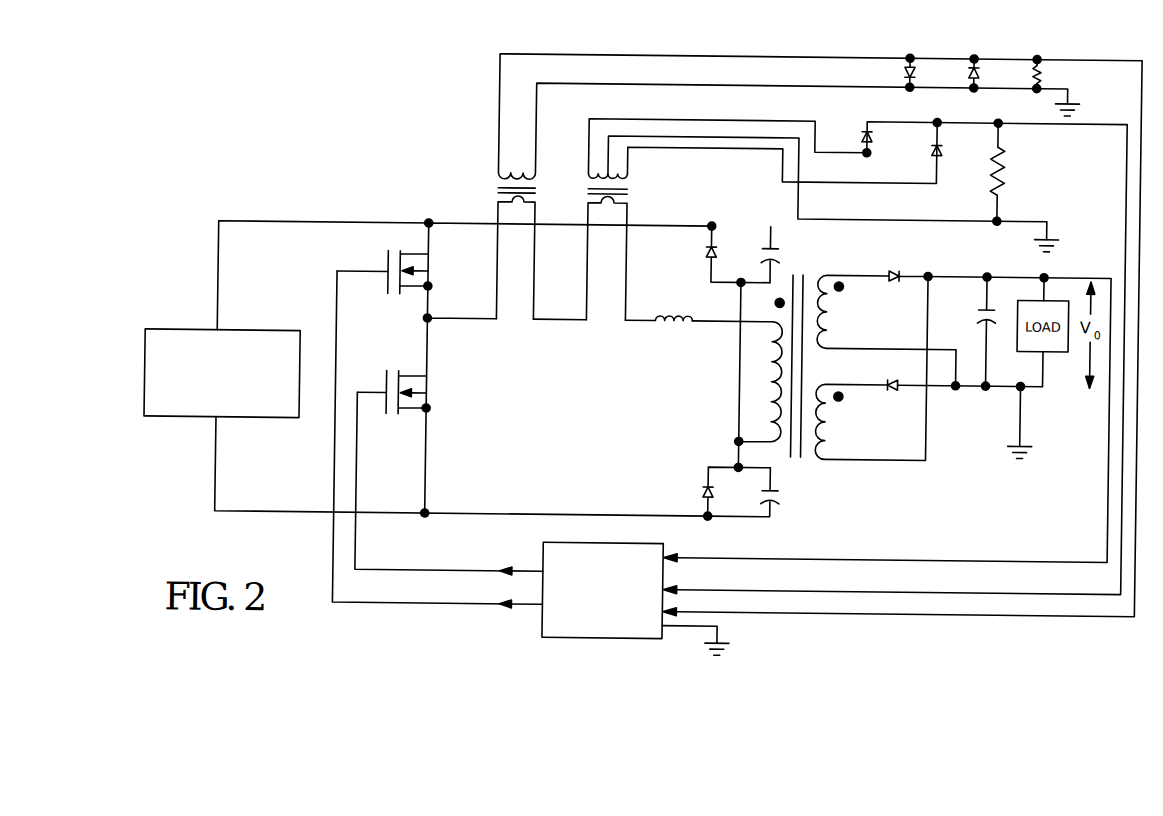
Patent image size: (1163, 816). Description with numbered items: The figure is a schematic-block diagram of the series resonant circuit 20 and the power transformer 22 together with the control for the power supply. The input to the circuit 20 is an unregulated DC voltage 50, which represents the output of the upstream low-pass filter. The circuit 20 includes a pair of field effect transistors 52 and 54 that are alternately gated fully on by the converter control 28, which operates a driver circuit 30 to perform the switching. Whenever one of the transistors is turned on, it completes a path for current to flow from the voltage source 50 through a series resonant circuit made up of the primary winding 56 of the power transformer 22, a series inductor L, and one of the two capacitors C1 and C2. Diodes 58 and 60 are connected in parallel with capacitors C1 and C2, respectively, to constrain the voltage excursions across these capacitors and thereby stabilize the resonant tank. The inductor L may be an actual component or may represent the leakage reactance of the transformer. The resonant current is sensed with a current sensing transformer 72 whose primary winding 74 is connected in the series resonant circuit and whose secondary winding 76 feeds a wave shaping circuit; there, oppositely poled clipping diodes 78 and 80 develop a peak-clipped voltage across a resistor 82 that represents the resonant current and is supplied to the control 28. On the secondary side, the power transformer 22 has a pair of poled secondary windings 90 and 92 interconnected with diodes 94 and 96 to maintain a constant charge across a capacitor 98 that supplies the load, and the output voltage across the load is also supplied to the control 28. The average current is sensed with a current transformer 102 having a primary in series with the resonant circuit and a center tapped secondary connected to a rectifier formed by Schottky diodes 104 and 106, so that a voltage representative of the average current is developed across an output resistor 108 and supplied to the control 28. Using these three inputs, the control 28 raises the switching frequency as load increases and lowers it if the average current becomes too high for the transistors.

The series resonant circuit 20 is at (590, 424).
The power transformer 22 is at (828, 386).
The control 28 is at (636, 585).
The driver circuit 30 is at (580, 553).
The unregulated DC voltage 50 is at (276, 403).
The field effect transistor 52 is at (429, 266).
The field effect transistor 54 is at (432, 379).
The primary winding 56 is at (768, 387).
The diode 58 is at (703, 252).
The diode 60 is at (705, 490).
The current sensing transformer 72 is at (794, 335).
The primary winding 74 is at (516, 205).
The secondary winding 76 is at (511, 176).
The clipping diode 78 is at (898, 72).
The clipping diode 80 is at (961, 71).
The resistor 82 is at (1028, 69).
The secondary winding 90 is at (829, 423).
The secondary winding 92 is at (829, 312).
The diode 94 is at (891, 267).
The diode 96 is at (889, 378).
The capacitor 98 is at (975, 316).
The current transformer 102 is at (630, 191).
The Schottky diode 104 is at (859, 134).
The Schottky diode 106 is at (929, 145).
The output resistor 108 is at (1010, 175).
The capacitor C1 is at (784, 256).
The capacitor C2 is at (782, 497).
The series inductor L is at (676, 328).